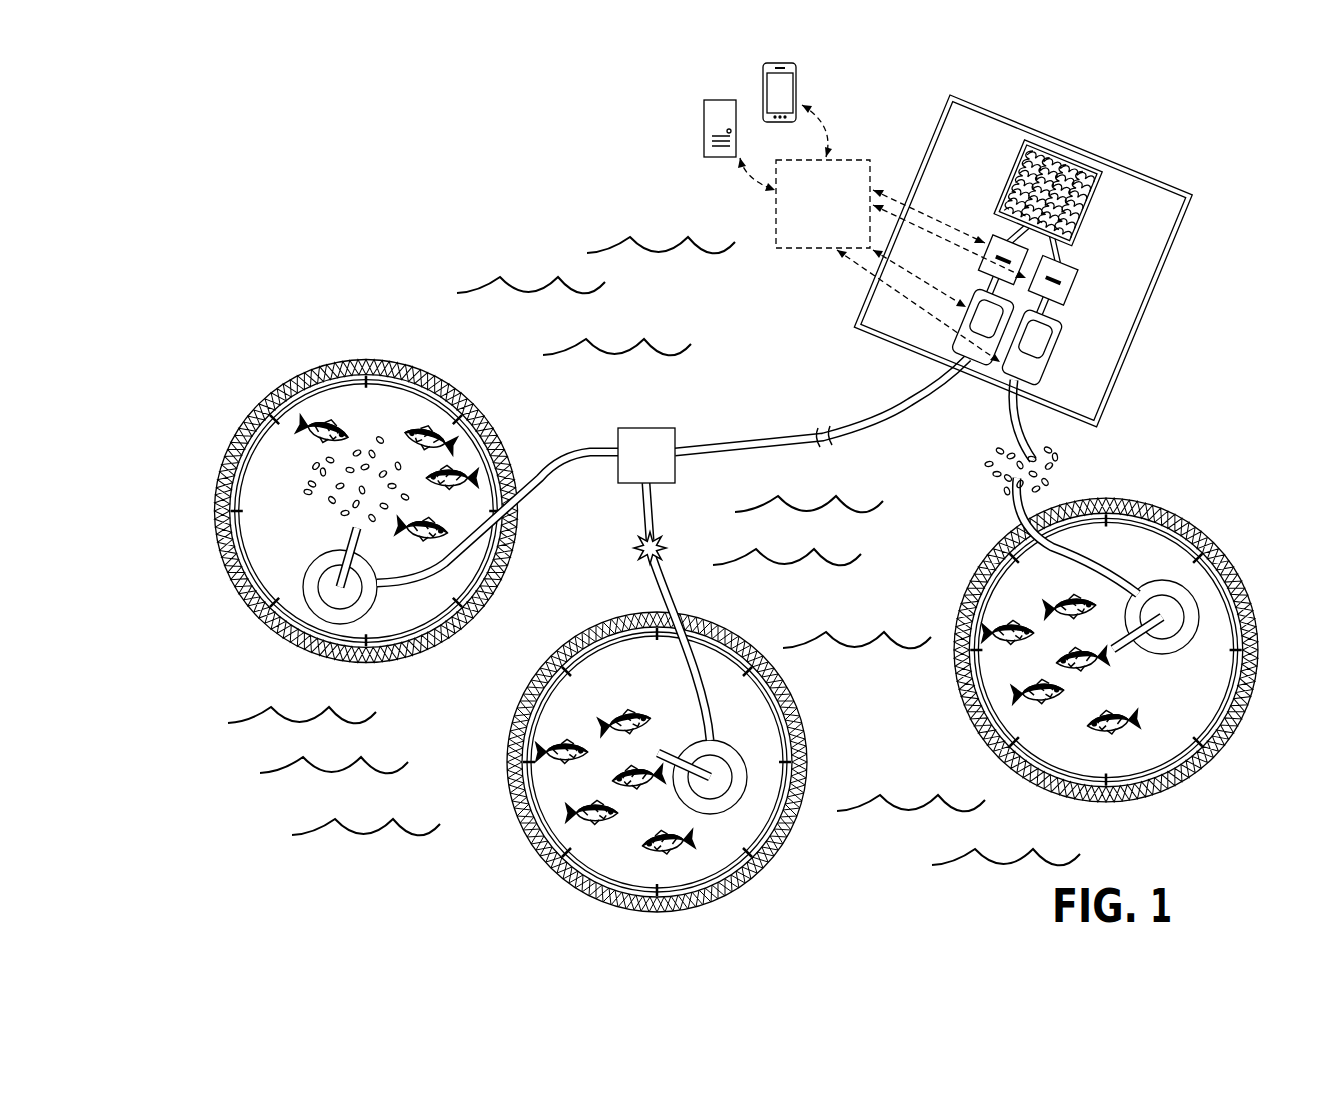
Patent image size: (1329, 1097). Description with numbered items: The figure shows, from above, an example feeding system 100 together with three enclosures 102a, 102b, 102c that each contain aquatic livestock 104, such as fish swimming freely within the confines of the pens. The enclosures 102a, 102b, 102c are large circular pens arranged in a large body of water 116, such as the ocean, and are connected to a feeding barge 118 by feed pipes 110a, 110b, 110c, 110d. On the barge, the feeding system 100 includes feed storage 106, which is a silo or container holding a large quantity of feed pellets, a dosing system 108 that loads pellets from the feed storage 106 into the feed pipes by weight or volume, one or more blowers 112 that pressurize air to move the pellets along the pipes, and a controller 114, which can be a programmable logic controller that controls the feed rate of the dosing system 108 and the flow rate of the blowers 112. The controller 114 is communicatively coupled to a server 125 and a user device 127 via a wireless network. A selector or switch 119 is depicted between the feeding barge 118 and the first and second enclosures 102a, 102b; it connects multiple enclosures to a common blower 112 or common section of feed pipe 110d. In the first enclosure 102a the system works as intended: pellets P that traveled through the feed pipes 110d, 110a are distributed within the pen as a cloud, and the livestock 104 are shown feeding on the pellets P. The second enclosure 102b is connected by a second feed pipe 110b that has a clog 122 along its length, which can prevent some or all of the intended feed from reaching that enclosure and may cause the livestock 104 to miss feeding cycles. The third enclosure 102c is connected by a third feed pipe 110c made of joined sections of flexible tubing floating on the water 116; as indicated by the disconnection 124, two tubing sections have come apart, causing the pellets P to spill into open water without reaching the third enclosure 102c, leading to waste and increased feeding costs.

The feeding system 100 is at (926, 76).
The first enclosure 102a is at (255, 412).
The second enclosure 102b is at (757, 650).
The third enclosure 102c is at (1193, 527).
The aquatic livestock 104 is at (458, 388).
The feed storage 106 is at (1078, 148).
The dosing system 108 is at (1073, 282).
The first feed pipe 110a is at (556, 464).
The second feed pipe 110b is at (640, 532).
The third feed pipe 110c is at (1012, 433).
The feed pipe section 110d is at (735, 446).
The blower 112 is at (1050, 352).
The controller 114 is at (804, 214).
The body of water 116 is at (592, 230).
The feeding barge 118 is at (1178, 246).
The selector or switch 119 is at (665, 470).
The clog 122 is at (671, 538).
The disconnection 124 is at (996, 465).
The server 125 is at (705, 112).
The user device 127 is at (780, 63).
The pellets P is at (312, 372).